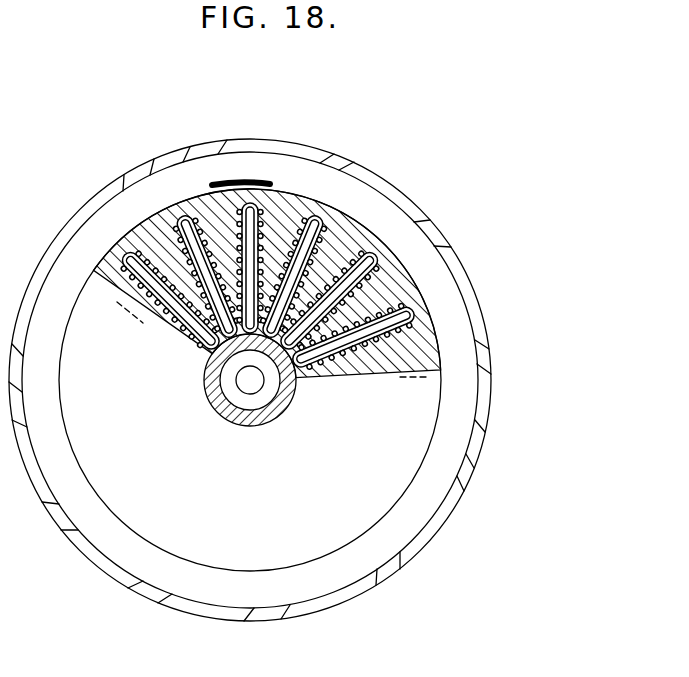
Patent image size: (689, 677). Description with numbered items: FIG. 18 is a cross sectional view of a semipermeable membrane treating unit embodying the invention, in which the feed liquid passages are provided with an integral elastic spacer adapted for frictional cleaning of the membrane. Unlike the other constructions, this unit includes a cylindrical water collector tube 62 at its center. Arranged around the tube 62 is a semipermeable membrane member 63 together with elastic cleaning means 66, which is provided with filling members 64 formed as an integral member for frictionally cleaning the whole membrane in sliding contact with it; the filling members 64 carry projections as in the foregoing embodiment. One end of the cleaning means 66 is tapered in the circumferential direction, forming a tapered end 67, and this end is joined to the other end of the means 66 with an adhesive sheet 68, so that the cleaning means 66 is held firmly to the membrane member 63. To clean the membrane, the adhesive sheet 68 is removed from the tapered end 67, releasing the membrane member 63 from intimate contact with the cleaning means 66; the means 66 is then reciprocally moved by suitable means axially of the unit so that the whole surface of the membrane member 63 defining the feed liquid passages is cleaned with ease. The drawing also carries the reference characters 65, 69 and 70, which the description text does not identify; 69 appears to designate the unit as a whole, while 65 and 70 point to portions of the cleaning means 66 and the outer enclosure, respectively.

The cylindrical water collector tube 62 is at (293, 393).
The semipermeable membrane member 63 is at (340, 207).
The filling members 64 is at (383, 303).
The fin slot 65 is at (395, 258).
The elastic cleaning means 66 is at (358, 230).
The tapered end 67 is at (187, 200).
The adhesive sheet 68 is at (231, 185).
The rotor assembly 69 is at (339, 218).
The outer ring 70 is at (460, 360).